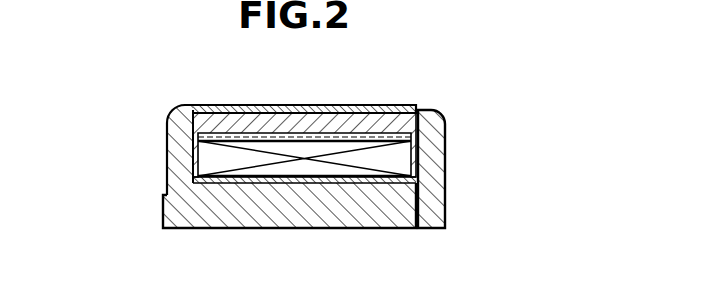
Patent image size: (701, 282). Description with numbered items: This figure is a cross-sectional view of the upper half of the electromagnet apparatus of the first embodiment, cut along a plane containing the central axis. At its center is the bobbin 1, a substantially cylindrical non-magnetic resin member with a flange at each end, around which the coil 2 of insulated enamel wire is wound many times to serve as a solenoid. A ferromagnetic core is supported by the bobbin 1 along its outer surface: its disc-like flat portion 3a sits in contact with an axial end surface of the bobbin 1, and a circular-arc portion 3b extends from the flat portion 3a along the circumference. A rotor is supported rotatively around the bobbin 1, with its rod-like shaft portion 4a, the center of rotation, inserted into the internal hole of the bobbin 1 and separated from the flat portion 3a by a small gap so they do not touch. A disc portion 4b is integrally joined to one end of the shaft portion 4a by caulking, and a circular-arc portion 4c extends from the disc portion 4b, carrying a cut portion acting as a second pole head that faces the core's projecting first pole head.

The bobbin 1 is at (378, 186).
The coil 2 is at (445, 127).
The disc-like flat portion 3a is at (430, 192).
The circular-arc portion 3b is at (368, 113).
The shaft portion 4a is at (253, 210).
The disc portion 4b is at (167, 149).
The circular-arc portion 4c is at (249, 106).